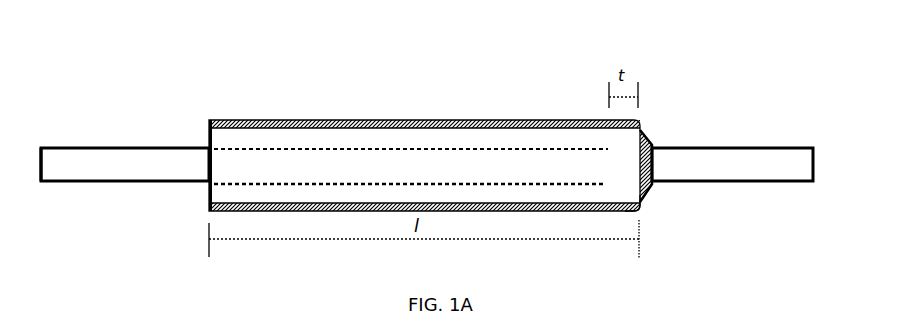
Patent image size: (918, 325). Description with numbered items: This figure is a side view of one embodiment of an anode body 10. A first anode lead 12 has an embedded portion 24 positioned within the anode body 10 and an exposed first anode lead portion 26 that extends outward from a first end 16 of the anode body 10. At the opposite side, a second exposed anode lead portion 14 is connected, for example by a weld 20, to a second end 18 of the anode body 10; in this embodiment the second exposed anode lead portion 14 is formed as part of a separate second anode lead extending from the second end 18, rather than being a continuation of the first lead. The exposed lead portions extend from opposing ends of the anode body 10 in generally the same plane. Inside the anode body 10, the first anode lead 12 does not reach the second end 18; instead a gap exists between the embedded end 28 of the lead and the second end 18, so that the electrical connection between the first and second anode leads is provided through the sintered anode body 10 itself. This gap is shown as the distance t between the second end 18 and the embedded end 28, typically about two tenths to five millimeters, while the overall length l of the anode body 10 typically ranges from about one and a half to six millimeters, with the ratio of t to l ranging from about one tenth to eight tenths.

The anode body 10 is at (260, 127).
The first anode lead 12 is at (123, 163).
The second exposed anode lead portion 14 is at (752, 162).
The first end 16 is at (209, 147).
The second end 18 is at (642, 200).
The weld 20 is at (655, 145).
The embedded portion 24 is at (332, 165).
The exposed first anode lead portion 26 is at (98, 163).
The embedded end 28 is at (602, 165).